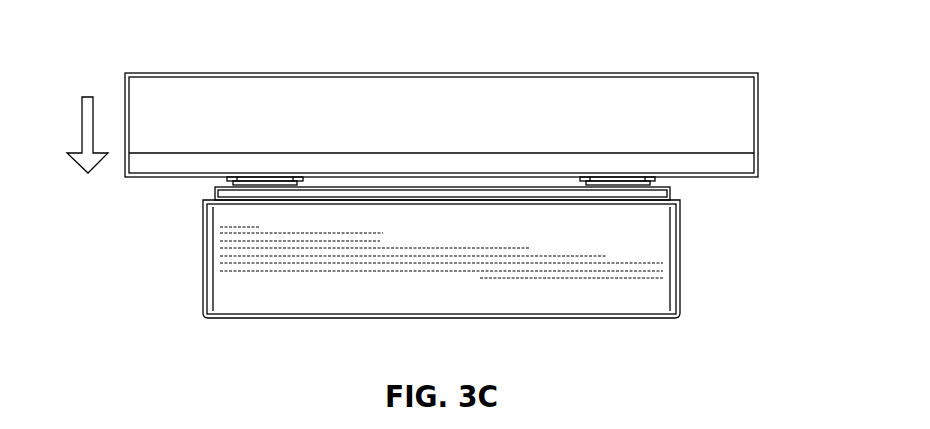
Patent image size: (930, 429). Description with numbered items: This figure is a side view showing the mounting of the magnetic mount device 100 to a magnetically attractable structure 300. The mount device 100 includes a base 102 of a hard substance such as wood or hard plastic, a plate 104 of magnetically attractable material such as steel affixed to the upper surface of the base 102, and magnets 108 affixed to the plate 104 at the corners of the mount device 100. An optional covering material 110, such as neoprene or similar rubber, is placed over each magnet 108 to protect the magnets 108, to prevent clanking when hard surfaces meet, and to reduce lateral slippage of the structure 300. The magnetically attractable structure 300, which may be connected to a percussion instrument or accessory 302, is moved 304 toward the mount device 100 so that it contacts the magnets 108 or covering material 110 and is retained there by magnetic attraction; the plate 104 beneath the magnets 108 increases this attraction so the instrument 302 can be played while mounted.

The magnetic mount device 100 is at (706, 267).
The base 102 is at (458, 305).
The plate 104 is at (215, 188).
The magnets 108 is at (657, 182).
The covering material 110 is at (618, 176).
The magnetically attractable structure 300 is at (758, 116).
The percussion instrument or accessory 302 is at (457, 113).
The movement toward mount device 304 is at (82, 117).